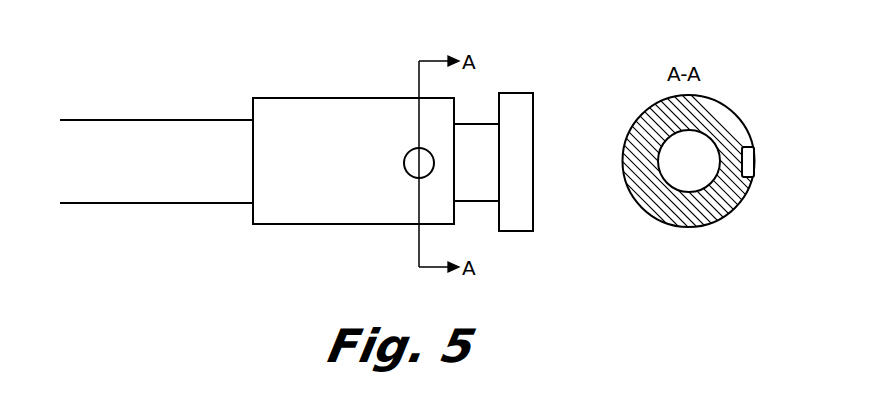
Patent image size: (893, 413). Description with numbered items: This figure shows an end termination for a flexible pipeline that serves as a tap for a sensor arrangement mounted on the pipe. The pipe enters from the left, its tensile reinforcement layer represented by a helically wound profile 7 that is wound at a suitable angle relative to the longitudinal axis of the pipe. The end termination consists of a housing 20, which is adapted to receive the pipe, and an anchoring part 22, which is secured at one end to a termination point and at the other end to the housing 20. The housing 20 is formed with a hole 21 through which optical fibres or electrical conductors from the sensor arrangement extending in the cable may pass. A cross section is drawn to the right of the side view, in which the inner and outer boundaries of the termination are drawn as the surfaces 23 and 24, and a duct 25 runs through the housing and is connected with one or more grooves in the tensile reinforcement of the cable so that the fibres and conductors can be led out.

The helically wound profile 7 is at (148, 170).
The housing 20 is at (317, 202).
The hole 21 is at (427, 165).
The anchoring part 22 is at (522, 125).
The central bore 23 is at (702, 140).
The annular wall 24 is at (735, 203).
The duct 25 is at (750, 158).